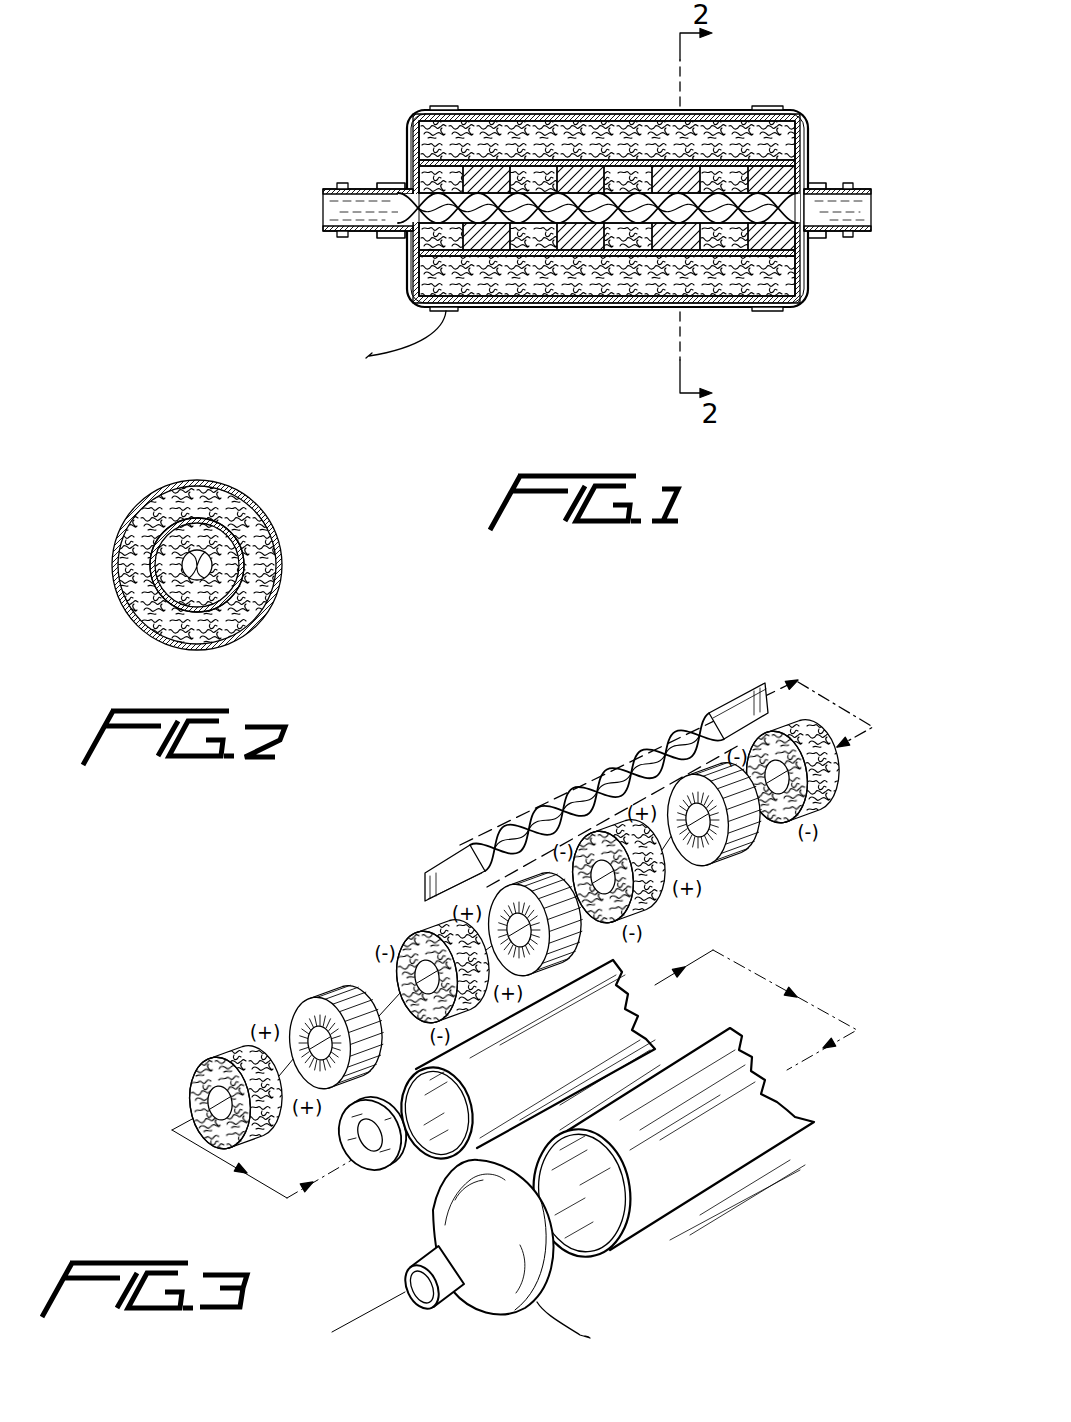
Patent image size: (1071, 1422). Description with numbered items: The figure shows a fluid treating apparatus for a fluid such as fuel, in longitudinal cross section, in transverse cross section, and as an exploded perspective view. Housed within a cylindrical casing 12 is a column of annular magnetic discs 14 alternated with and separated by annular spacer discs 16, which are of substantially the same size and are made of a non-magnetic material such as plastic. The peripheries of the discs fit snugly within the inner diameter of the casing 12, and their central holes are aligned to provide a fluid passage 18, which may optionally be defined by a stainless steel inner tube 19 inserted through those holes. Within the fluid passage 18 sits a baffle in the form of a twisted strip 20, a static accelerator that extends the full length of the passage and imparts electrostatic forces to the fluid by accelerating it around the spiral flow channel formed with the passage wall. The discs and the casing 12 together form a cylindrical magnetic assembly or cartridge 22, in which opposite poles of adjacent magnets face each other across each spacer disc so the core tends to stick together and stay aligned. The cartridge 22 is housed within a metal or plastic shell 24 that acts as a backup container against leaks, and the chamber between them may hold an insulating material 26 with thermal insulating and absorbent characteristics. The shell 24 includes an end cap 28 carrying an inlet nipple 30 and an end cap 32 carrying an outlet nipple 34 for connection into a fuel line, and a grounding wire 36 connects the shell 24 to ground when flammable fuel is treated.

In FIG. 1, the cylindrical casing 12 is at (765, 261).
In FIG. 2, the cylindrical casing 12 is at (232, 530).
In FIG. 3, the cylindrical casing 12 is at (412, 1170).
In FIG. 1, the annular magnetic discs 14 is at (548, 178).
In FIG. 3, the annular magnetic discs 14 is at (802, 732).
In FIG. 1, the annular spacer discs 16 is at (490, 178).
In FIG. 3, the annular spacer discs 16 is at (750, 838).
In FIG. 1, the fluid passage 18 is at (673, 222).
In FIG. 2, the fluid passage 18 is at (183, 565).
In FIG. 3, the stainless steel inner tube 19 is at (592, 770).
In FIG. 1, the twisted strip 20 is at (416, 213).
In FIG. 2, the twisted strip 20 is at (212, 563).
In FIG. 3, the twisted strip 20 is at (697, 735).
In FIG. 1, the cylindrical magnetic assembly or cartridge 22 is at (607, 208).
In FIG. 2, the cylindrical magnetic assembly or cartridge 22 is at (145, 560).
In FIG. 3, the cylindrical magnetic assembly or cartridge 22 is at (526, 1063).
In FIG. 1, the shell 24 is at (631, 117).
In FIG. 2, the shell 24 is at (127, 512).
In FIG. 3, the shell 24 is at (768, 1157).
In FIG. 1, the insulating material 26 is at (431, 147).
In FIG. 2, the insulating material 26 is at (195, 490).
In FIG. 1, the end cap 28 is at (416, 114).
In FIG. 3, the end cap 28 is at (432, 1222).
In FIG. 1, the inlet nipple 30 is at (340, 190).
In FIG. 3, the inlet nipple 30 is at (409, 1266).
In FIG. 1, the end cap 32 is at (776, 108).
In FIG. 1, the outlet nipple 34 is at (812, 183).
In FIG. 1, the grounding wire 36 is at (398, 345).
In FIG. 3, the grounding wire 36 is at (580, 1323).